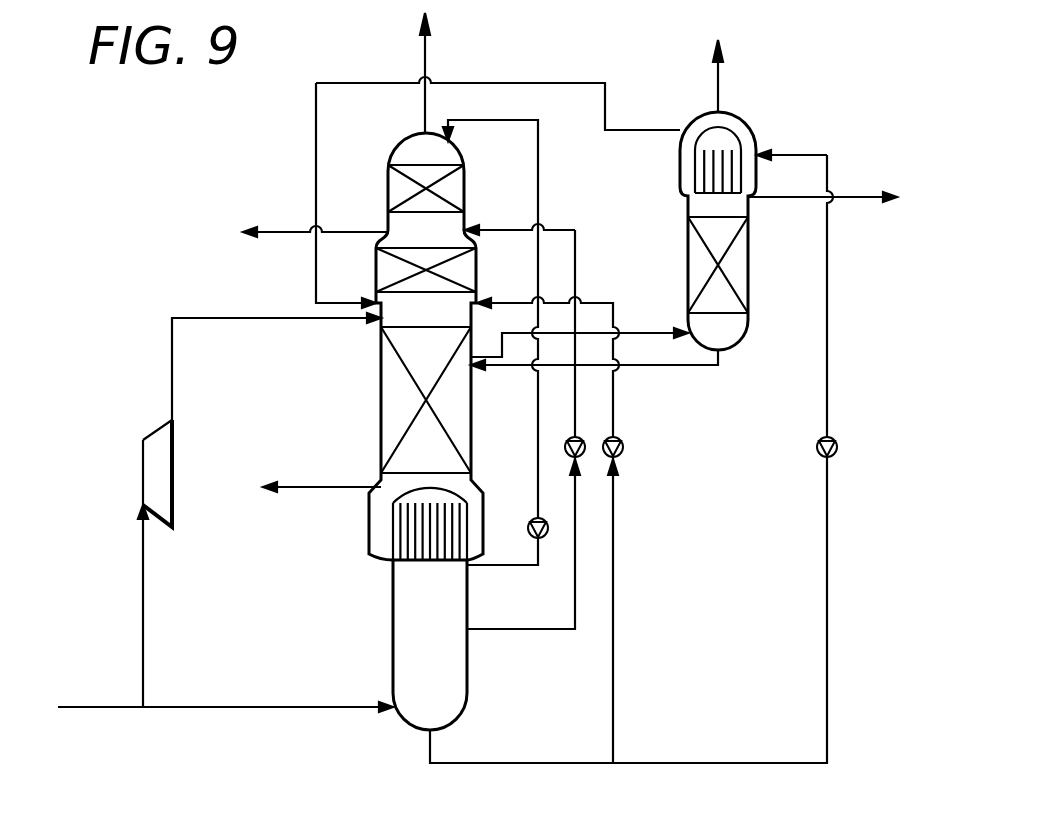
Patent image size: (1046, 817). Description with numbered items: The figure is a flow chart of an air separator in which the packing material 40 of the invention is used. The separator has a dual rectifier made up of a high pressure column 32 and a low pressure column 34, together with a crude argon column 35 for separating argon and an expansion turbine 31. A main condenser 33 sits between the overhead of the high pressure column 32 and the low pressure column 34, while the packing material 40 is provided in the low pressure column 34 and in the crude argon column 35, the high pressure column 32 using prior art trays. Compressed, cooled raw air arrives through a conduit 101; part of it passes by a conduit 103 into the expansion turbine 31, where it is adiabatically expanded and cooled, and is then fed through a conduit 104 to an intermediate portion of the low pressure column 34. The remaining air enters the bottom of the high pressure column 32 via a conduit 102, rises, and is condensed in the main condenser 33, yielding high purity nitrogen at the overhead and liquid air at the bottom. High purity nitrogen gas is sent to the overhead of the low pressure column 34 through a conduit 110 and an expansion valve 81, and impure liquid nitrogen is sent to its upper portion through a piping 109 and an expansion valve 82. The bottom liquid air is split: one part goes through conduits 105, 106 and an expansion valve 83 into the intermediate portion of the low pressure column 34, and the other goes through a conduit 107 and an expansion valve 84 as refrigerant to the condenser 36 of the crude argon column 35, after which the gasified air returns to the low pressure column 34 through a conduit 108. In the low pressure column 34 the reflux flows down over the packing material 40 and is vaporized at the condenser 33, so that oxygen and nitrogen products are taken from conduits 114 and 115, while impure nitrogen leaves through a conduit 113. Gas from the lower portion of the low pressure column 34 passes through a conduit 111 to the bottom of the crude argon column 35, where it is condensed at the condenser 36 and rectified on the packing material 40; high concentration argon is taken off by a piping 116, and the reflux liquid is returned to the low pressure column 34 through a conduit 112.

The expansion turbine 31 is at (143, 475).
The high pressure column 32 is at (393, 653).
The main condenser 33 is at (393, 535).
The low pressure column 34 is at (381, 370).
The crude argon column 35 is at (688, 258).
The condenser 36 is at (695, 170).
The packing material 40 is at (388, 190).
The expansion valve 81 is at (528, 518).
The expansion valve 82 is at (568, 455).
The expansion valve 83 is at (623, 447).
The expansion valve 84 is at (838, 447).
The conduit 101 is at (80, 705).
The conduit 102 is at (243, 705).
The conduit 103 is at (143, 638).
The conduit 104 is at (233, 318).
The conduit 105 is at (518, 763).
The conduit 106 is at (613, 705).
The conduit 107 is at (827, 688).
The conduit 108 is at (546, 83).
The piping 109 is at (518, 629).
The conduit 110 is at (538, 178).
The conduit 111 is at (637, 333).
The conduit 112 is at (690, 365).
The conduit 113 is at (282, 232).
The conduit 114 is at (418, 47).
The conduit 115 is at (310, 487).
The piping 116 is at (860, 197).